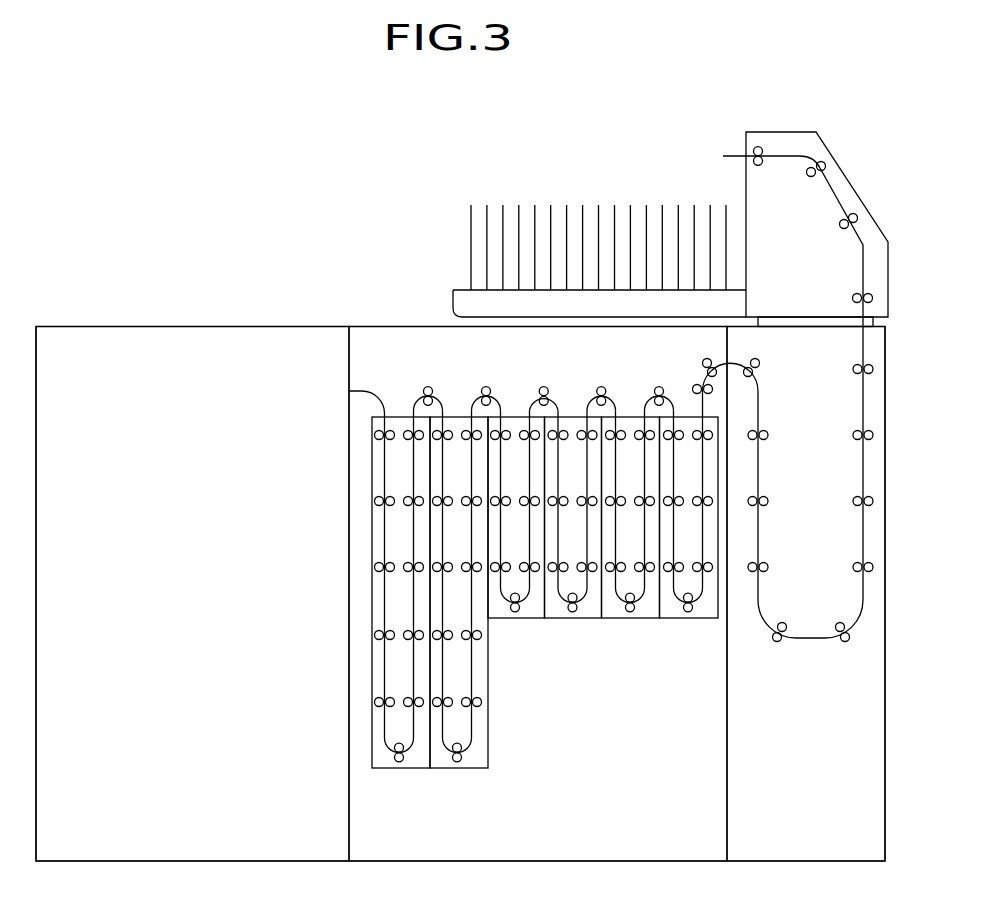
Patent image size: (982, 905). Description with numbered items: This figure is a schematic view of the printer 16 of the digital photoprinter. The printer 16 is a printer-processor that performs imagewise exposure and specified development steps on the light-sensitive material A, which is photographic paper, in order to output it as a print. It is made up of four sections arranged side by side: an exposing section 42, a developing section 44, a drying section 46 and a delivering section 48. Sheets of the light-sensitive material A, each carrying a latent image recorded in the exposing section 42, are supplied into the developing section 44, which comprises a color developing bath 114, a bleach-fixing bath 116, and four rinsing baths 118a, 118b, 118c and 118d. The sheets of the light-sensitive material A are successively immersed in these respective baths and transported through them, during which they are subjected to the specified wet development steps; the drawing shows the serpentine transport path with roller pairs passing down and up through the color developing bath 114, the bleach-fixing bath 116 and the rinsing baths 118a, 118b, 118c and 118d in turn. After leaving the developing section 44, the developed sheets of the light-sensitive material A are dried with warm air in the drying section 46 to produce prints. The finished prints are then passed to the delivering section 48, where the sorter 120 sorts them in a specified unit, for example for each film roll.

The printer 16 is at (306, 189).
The exposing section 42 is at (206, 596).
The developing section 44 is at (615, 779).
The drying section 46 is at (819, 781).
The delivering section 48 is at (832, 124).
The sorter 120 is at (628, 179).
The color developing bath 114 is at (408, 426).
The bleach-fixing bath 116 is at (462, 426).
The rinsing bath 118a is at (515, 426).
The rinsing bath 118b is at (570, 426).
The rinsing bath 118c is at (630, 426).
The rinsing bath 118d is at (687, 426).
The light-sensitive material A is at (758, 477).